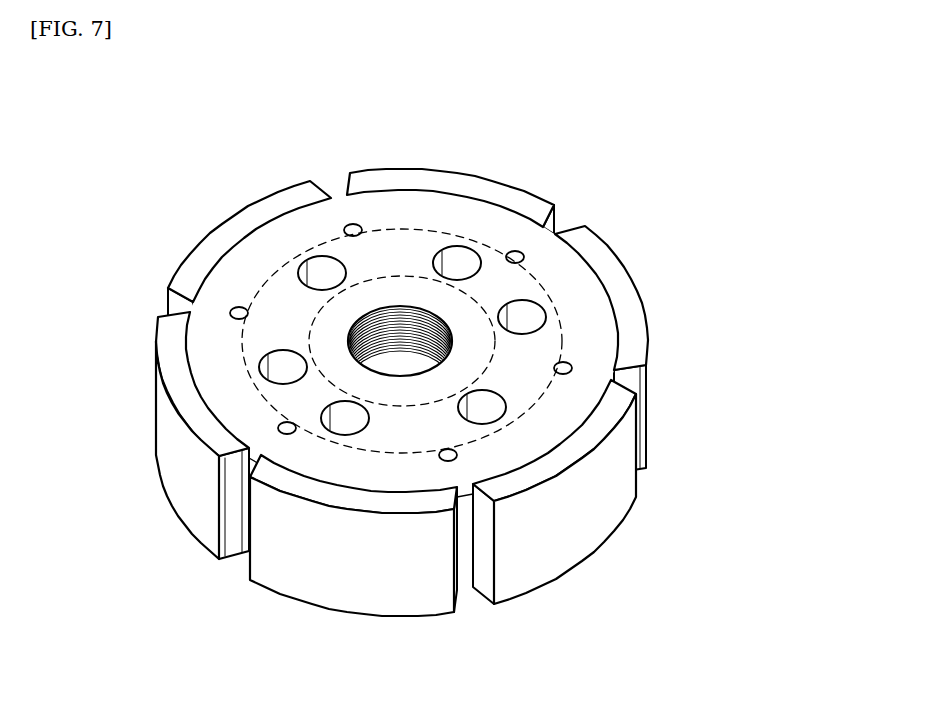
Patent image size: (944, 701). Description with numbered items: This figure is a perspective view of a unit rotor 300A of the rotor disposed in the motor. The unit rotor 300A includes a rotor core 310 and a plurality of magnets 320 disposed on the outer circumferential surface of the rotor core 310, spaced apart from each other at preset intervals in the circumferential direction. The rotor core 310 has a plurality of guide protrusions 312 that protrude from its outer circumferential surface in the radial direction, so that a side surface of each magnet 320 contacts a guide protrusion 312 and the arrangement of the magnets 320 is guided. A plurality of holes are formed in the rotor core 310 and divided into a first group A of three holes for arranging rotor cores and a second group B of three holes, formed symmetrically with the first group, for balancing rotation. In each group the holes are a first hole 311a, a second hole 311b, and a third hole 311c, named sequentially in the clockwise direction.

The unit rotor 300A is at (149, 120).
The rotor core 310 is at (385, 217).
The first hole 311a is at (527, 315).
The second hole 311b is at (327, 269).
The third hole 311c is at (462, 261).
The guide protrusion 312 is at (190, 297).
The magnet 320 is at (175, 452).